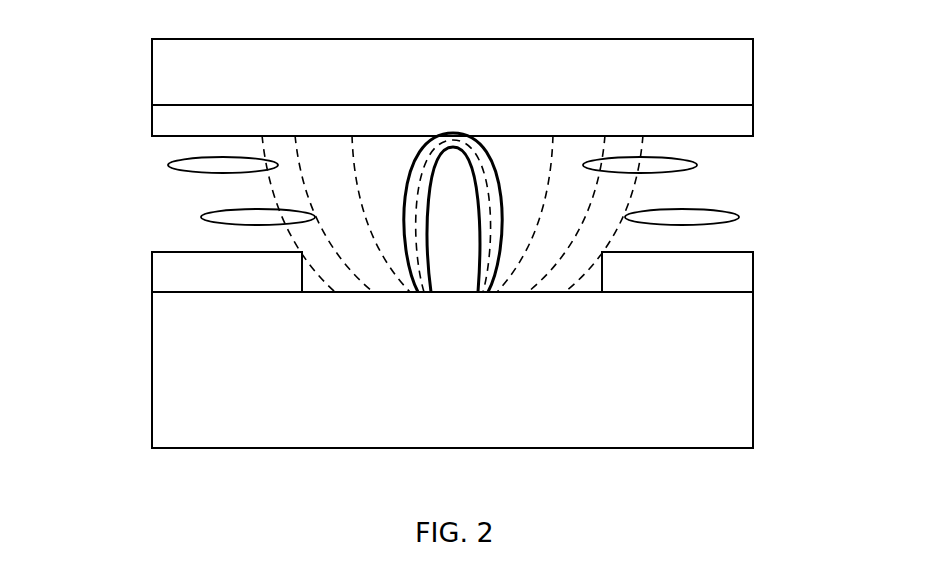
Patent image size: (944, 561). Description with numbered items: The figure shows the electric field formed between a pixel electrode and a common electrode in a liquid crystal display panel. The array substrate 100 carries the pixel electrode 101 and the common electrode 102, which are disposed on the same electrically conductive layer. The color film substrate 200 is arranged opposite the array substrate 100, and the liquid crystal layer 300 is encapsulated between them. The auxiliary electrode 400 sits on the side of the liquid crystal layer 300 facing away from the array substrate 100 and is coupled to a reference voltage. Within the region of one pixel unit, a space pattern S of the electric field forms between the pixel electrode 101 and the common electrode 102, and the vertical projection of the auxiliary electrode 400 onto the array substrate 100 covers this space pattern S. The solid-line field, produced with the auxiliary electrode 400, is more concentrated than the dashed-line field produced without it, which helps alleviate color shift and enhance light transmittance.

The array substrate 100 is at (226, 398).
The pixel electrode 101 is at (700, 272).
The common electrode 102 is at (198, 280).
The color film substrate 200 is at (710, 82).
The liquid crystal layer 300 is at (218, 203).
The auxiliary electrode 400 is at (715, 123).
The space pattern S is at (567, 258).